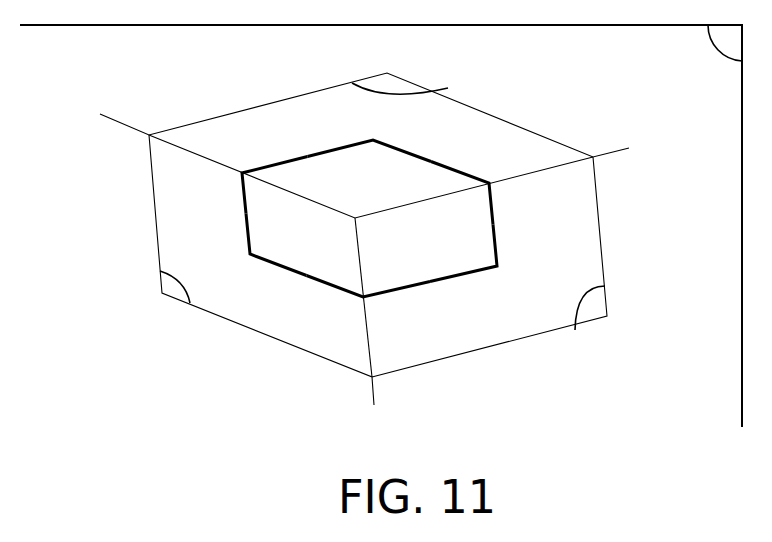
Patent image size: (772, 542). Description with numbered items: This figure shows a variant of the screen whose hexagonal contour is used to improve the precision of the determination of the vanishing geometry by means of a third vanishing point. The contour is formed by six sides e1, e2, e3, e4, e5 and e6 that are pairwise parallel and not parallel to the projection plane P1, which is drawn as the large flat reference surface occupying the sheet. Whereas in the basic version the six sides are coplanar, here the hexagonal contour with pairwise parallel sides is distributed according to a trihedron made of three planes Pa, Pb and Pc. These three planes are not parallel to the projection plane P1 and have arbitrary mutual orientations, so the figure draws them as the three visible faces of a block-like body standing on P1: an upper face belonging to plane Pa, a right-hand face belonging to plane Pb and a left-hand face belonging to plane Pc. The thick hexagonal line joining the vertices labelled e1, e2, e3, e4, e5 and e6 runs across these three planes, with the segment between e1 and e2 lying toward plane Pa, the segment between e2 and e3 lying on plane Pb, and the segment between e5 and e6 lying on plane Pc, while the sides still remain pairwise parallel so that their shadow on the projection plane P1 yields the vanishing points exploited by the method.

The projection plane P1 is at (381, 226).
The first plane of the trihedron Pa is at (364, 145).
The second plane of the trihedron Pb is at (489, 267).
The third plane of the trihedron Pc is at (261, 270).
The first side of the hexagonal contour e1 is at (370, 143).
The second side of the hexagonal contour e2 is at (473, 193).
The third side of the hexagonal contour e3 is at (475, 253).
The fourth side of the hexagonal contour e4 is at (369, 296).
The fifth side of the hexagonal contour e5 is at (269, 245).
The sixth side of the hexagonal contour e6 is at (265, 185).